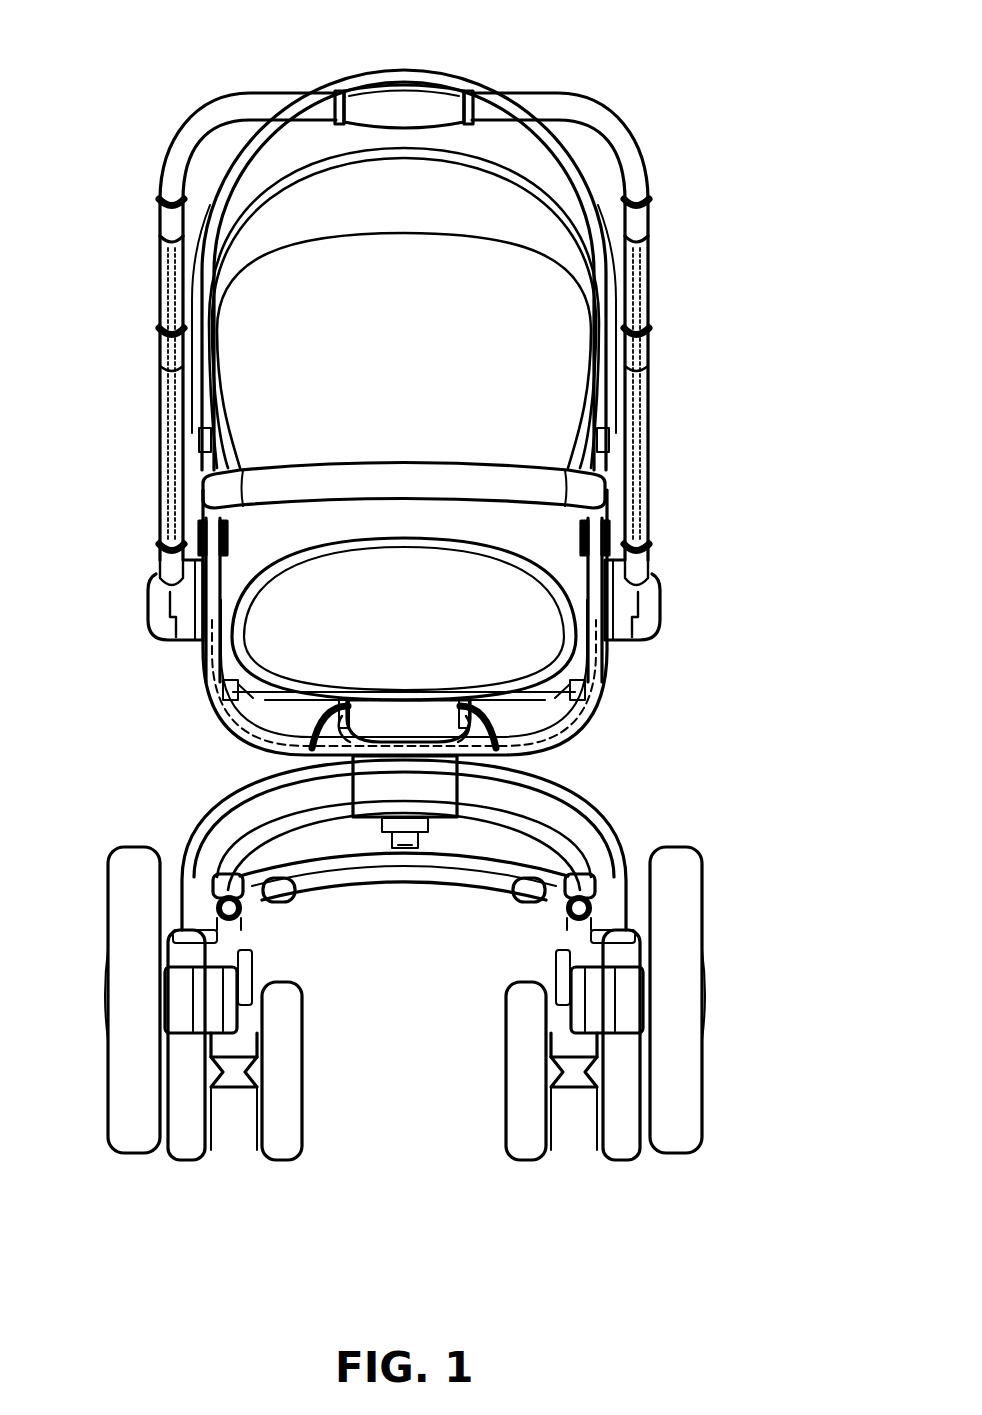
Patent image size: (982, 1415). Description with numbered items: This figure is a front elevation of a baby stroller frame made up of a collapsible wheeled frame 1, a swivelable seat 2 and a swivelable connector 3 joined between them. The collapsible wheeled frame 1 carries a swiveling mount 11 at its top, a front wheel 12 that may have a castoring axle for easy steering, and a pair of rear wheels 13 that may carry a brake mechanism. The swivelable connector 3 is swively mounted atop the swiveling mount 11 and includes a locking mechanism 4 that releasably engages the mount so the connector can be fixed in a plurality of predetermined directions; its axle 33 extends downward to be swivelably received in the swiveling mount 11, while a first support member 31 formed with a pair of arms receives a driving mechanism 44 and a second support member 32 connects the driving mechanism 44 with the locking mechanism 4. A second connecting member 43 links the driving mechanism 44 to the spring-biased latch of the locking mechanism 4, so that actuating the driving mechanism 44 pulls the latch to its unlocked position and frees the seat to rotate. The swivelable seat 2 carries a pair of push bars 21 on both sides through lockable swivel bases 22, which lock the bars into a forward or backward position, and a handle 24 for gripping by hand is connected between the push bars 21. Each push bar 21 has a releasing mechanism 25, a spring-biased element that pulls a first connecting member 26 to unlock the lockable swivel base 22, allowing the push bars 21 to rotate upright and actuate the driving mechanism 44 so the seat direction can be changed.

The collapsible wheeled frame 1 is at (770, 805).
The swivelable seat 2 is at (783, 271).
The swivelable connector 3 is at (168, 739).
The locking mechanism 4 is at (340, 757).
The swiveling mount 11 is at (424, 803).
The front wheel 12 is at (516, 1043).
The rear wheels 13 is at (694, 932).
The push bars 21 is at (650, 382).
The lockable swivel base 22 is at (652, 617).
The grip 24 is at (404, 90).
The releasing mechanism 25 is at (648, 218).
The first connecting member 26 is at (648, 470).
The first support member 31 is at (240, 733).
The second support member 32 is at (477, 712).
The axle 33 is at (405, 846).
The second connecting member 43 is at (580, 738).
The driving mechanism 44 is at (200, 608).